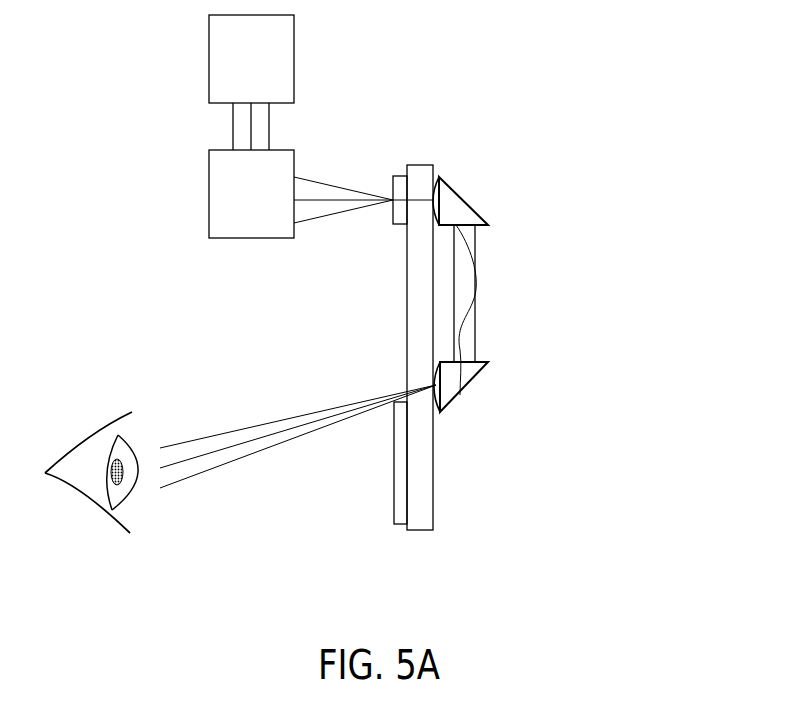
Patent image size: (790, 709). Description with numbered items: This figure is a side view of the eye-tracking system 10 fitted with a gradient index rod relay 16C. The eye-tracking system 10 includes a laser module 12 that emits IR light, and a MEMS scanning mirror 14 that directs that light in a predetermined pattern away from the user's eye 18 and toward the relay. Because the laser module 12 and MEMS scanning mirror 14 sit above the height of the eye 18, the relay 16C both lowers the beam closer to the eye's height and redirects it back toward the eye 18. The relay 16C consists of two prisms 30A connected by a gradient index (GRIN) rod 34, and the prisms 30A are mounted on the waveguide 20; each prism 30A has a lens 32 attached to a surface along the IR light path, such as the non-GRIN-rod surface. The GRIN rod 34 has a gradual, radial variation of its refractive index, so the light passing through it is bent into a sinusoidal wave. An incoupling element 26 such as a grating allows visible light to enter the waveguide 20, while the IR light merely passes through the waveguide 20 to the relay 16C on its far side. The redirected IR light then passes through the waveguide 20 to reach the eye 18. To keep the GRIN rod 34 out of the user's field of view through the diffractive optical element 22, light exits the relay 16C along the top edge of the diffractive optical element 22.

The eye-tracking system 10 is at (113, 223).
The laser module 12 is at (241, 84).
The MEMS scanning mirror 14 is at (241, 219).
The gradient index rod relay 16C is at (553, 193).
The eye 18 is at (83, 497).
The waveguide 20 is at (422, 164).
The diffractive optical element 22 is at (398, 527).
The incoupling element 26 is at (397, 175).
The prism 30A is at (462, 190).
The lens 32 is at (437, 178).
The gradient index (GRIN) rod 34 is at (477, 303).